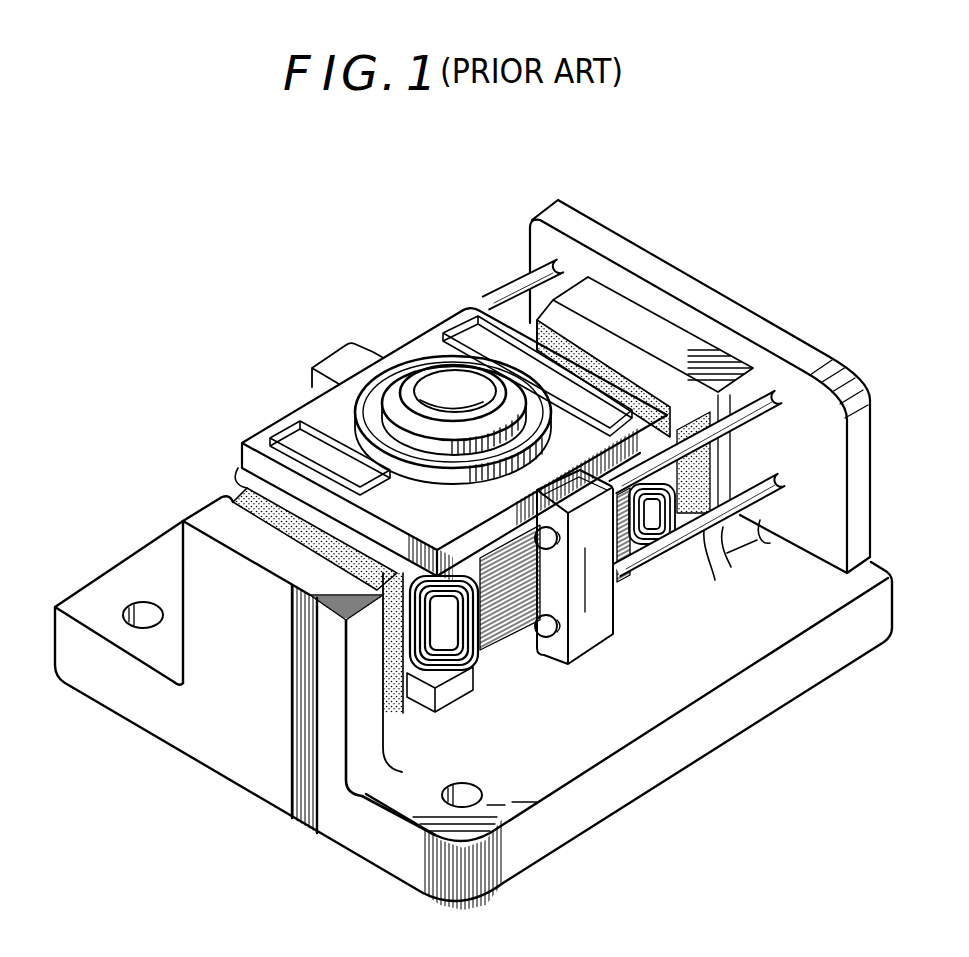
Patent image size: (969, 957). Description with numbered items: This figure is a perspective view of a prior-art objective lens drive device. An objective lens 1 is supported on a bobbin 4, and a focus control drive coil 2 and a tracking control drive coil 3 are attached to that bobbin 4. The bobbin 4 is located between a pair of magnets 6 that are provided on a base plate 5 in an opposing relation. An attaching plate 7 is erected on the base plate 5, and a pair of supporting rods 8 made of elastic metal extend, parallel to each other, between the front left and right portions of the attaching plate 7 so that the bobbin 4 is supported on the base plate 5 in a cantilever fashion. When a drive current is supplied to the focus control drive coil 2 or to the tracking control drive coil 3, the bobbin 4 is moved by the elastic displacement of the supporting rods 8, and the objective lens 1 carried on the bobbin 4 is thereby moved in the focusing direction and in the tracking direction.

The objective lens 1 is at (437, 380).
The focus control drive coil 2 is at (510, 622).
The tracking control drive coil 3 is at (468, 665).
The bobbin 4 is at (307, 410).
The base plate 5 is at (607, 740).
The magnets 6 is at (232, 497).
The attaching plate 7 is at (745, 313).
The supporting rods 8 is at (502, 285).